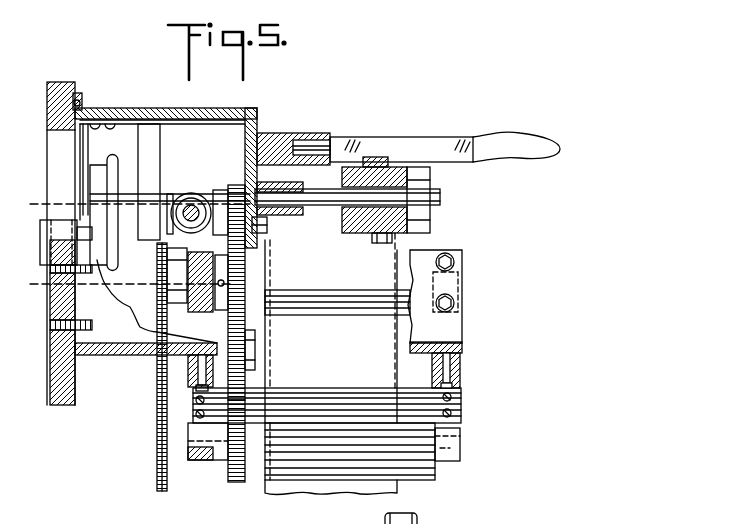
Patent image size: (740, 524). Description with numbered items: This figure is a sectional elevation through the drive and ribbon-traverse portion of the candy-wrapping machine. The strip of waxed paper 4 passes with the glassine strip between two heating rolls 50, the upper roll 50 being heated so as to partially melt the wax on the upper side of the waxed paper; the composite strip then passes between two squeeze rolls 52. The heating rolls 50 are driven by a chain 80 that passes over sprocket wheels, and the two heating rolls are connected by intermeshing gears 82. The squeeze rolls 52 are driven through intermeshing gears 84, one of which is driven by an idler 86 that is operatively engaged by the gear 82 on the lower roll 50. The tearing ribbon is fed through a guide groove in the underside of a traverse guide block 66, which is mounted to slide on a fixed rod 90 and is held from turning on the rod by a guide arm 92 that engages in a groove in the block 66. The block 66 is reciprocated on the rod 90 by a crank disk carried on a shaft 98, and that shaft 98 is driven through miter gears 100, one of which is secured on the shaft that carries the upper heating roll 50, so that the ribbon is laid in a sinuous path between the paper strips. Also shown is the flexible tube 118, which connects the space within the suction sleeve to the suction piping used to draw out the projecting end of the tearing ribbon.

The guide arm 92 is at (380, 136).
The traverse guide block 66 is at (410, 177).
The fixed rod 90 is at (440, 200).
The heating rolls 50 is at (423, 243).
The miter gears 100 is at (170, 193).
The shaft 98 is at (200, 192).
The intermeshing gears 82 is at (232, 266).
The idler 86 is at (245, 337).
The chain 80 is at (158, 440).
The intermeshing gears 84 is at (233, 473).
The squeeze rolls 52 is at (423, 468).
The strip of waxed paper 4 is at (280, 488).
The flexible tube 118 is at (424, 515).